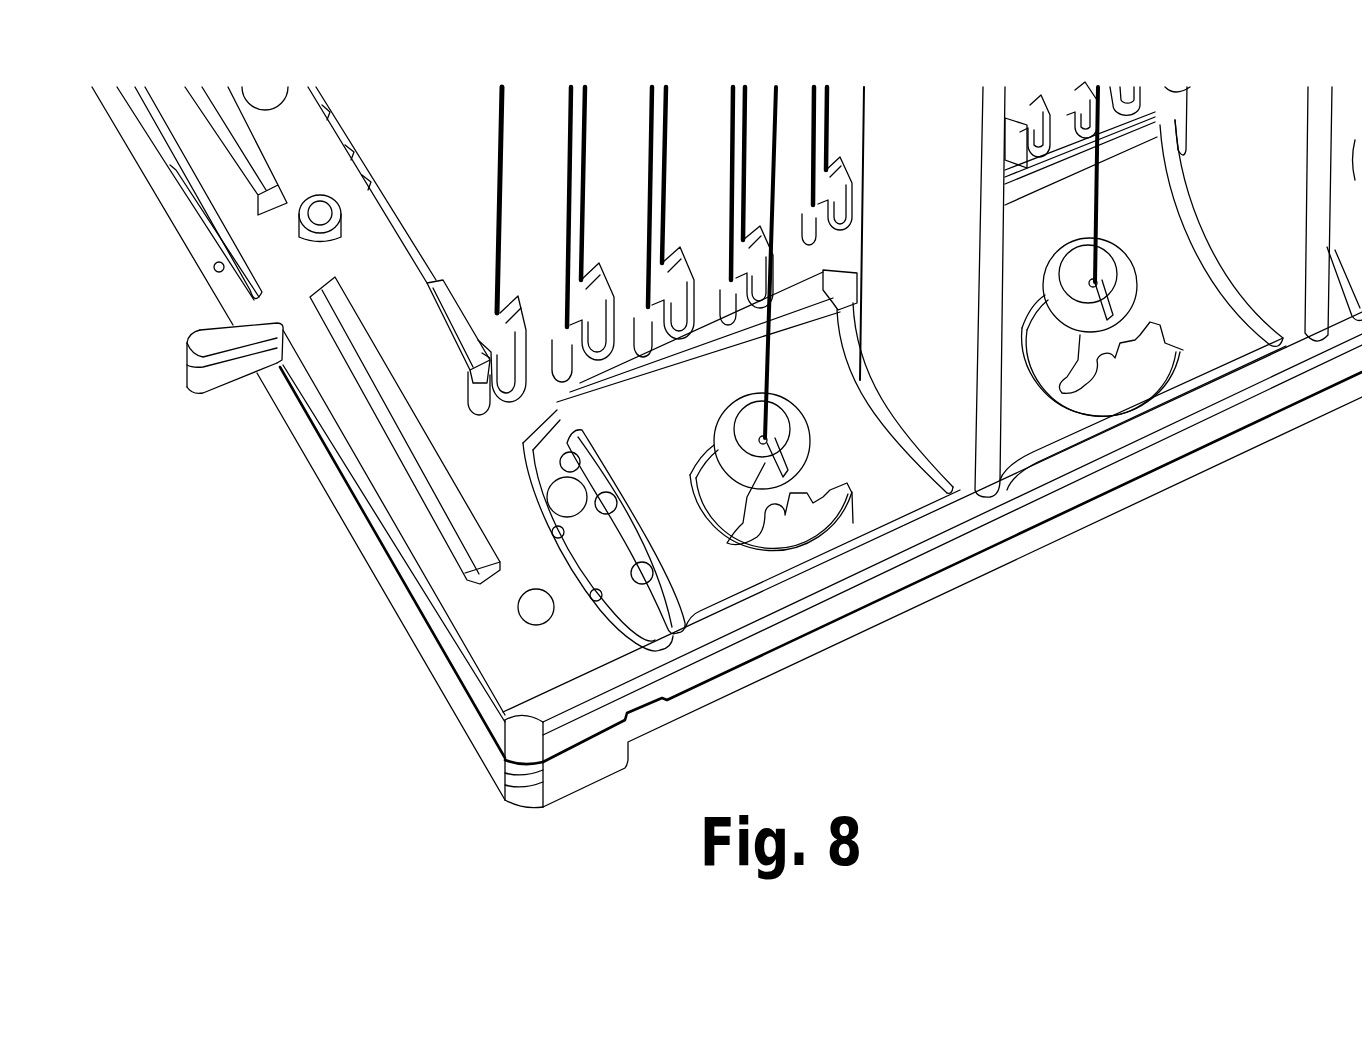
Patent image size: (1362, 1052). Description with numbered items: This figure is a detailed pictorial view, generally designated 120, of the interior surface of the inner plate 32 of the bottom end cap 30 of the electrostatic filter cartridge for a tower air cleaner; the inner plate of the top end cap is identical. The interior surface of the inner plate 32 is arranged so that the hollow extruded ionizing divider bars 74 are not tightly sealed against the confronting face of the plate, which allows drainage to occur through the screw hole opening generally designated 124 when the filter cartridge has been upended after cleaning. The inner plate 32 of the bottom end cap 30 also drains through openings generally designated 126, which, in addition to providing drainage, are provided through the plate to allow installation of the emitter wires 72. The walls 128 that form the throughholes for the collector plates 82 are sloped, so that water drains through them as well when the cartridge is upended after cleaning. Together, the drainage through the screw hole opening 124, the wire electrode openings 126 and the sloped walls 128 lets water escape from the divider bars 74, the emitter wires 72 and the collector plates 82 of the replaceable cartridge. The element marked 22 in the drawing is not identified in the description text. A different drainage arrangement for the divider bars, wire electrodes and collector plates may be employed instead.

The bottom end cap 30 is at (305, 748).
The detailed pictorial view 120 is at (395, 660).
The inner plate 32 is at (347, 505).
The collector plates 82 is at (457, 202).
The walls 128 is at (510, 393).
The screw hole opening 124 is at (562, 503).
The ionizing divider bars 74 is at (960, 182).
The contact terminals 22 is at (643, 572).
The emitter wires 72 is at (1097, 203).
The openings 126 is at (1143, 365).